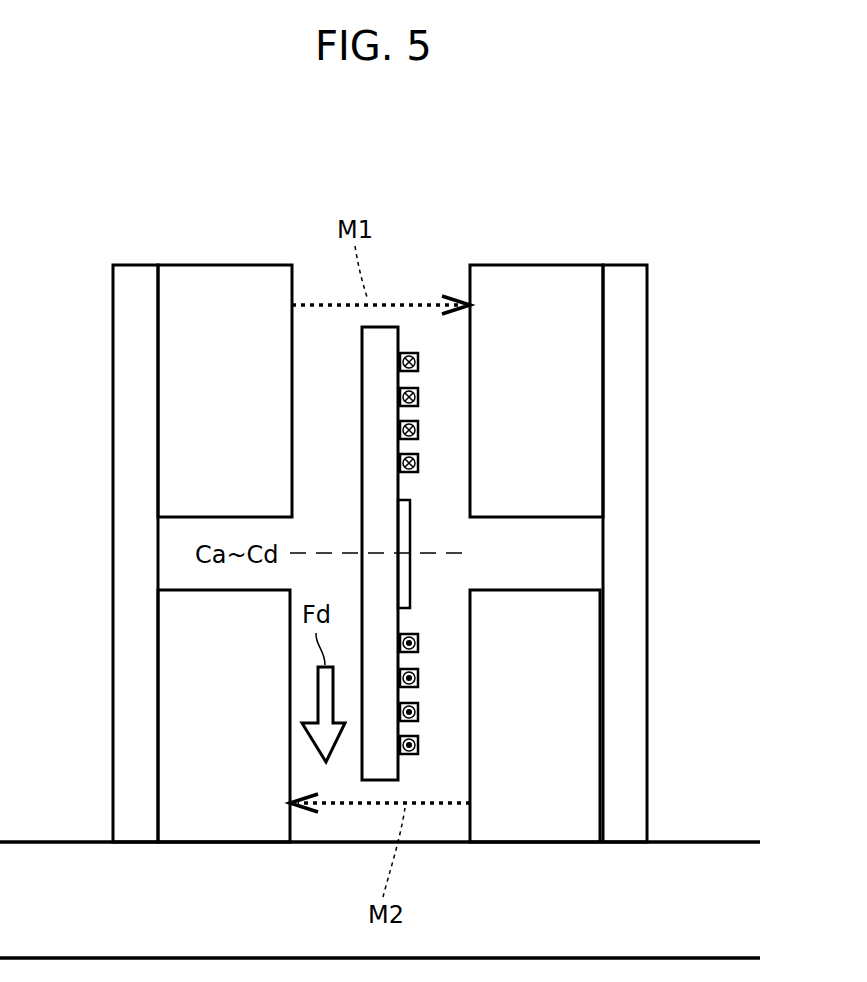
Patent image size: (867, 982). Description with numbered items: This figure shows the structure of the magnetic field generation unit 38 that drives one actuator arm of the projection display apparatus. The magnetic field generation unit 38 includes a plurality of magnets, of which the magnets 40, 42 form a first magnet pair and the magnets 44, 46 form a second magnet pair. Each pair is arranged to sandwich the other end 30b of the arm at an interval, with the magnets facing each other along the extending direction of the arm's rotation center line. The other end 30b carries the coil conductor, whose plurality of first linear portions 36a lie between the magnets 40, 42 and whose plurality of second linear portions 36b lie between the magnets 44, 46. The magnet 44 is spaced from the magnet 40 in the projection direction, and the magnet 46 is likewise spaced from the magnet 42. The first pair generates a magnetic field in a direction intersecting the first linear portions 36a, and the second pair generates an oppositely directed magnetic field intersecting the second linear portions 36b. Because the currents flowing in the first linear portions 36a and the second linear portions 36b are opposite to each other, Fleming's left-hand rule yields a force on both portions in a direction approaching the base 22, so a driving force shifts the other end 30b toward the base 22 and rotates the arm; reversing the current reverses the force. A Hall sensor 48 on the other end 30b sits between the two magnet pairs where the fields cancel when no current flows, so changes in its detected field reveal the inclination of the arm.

The magnetic field generation unit 38 is at (92, 225).
The magnet 40 is at (228, 285).
The magnet 42 is at (557, 287).
The magnet 44 is at (230, 827).
The magnet 46 is at (557, 818).
The base 22 is at (683, 860).
The other end 30b is at (390, 428).
The first linear portion 36a is at (419, 363).
The second linear portion 36b is at (419, 643).
The Hall sensor 48 is at (412, 587).